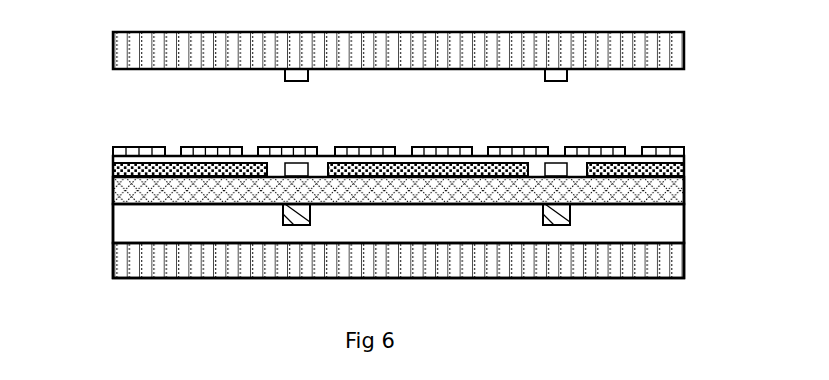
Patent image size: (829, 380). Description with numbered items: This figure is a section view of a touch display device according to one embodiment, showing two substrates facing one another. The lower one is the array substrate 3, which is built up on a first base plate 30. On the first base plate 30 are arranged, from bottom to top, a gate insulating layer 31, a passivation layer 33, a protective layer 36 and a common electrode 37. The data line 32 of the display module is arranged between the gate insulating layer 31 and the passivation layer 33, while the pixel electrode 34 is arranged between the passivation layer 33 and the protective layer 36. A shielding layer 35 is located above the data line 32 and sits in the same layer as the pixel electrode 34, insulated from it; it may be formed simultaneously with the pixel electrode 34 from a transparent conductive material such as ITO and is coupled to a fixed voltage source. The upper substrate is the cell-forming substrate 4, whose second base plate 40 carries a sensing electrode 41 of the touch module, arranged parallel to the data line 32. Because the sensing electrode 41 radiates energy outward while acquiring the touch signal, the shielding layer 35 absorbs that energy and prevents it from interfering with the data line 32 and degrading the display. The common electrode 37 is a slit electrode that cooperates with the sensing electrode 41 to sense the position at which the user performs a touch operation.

The array substrate 3 is at (398, 193).
The cell-forming substrate 4 is at (404, 71).
The first base plate 30 is at (678, 253).
The gate insulating layer 31 is at (678, 223).
The data line 32 is at (570, 215).
The passivation layer 33 is at (682, 187).
The pixel electrode 34 is at (682, 168).
The shielding layer 35 is at (553, 170).
The protective layer 36 is at (319, 167).
The common electrode 37 is at (685, 147).
The second base plate 40 is at (678, 45).
The sensing electrode 41 is at (561, 75).